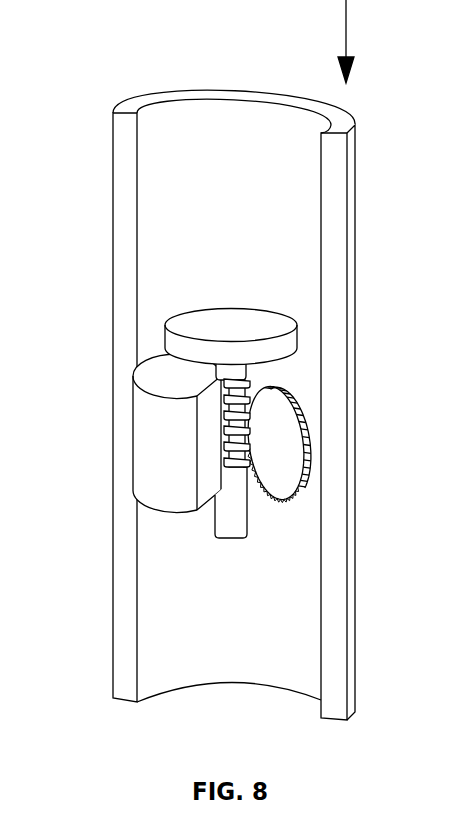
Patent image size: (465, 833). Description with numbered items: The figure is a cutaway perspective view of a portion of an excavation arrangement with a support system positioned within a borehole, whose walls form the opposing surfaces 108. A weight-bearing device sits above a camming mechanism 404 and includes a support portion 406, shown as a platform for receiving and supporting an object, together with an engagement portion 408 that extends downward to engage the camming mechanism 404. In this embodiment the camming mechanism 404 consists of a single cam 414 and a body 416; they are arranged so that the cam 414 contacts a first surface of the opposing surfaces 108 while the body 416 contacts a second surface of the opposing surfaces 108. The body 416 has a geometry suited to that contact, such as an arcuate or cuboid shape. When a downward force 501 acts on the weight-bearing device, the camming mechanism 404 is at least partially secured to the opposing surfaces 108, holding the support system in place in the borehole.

The opposing surfaces 108 is at (138, 163).
The downward force 501 is at (347, 31).
The camming mechanism 404 is at (248, 448).
The support portion 406 is at (280, 323).
The engagement portion 408 is at (280, 373).
The cam 414 is at (296, 456).
The body 416 is at (143, 438).